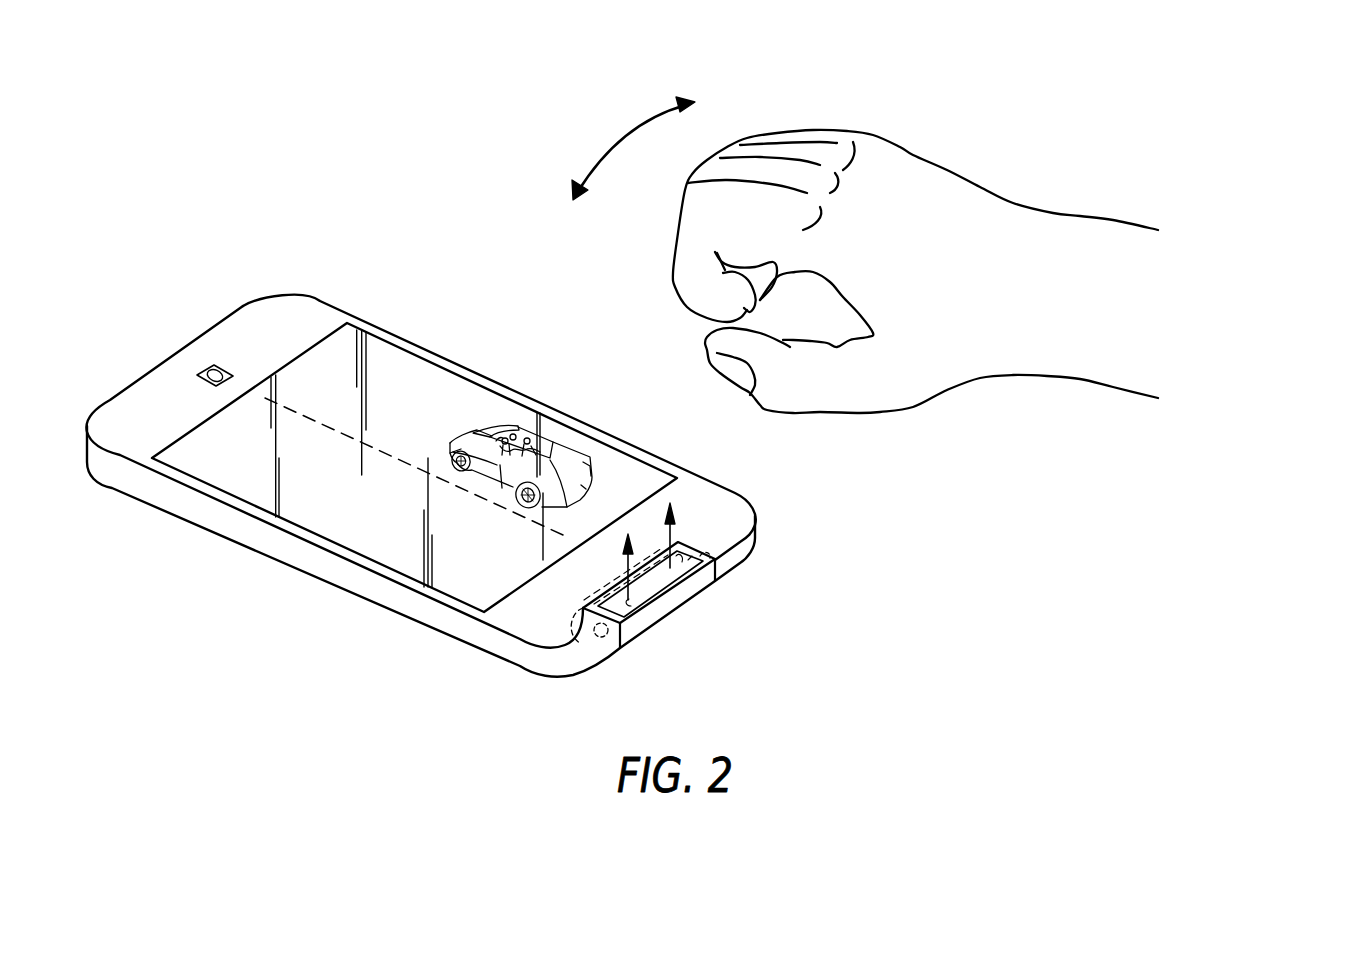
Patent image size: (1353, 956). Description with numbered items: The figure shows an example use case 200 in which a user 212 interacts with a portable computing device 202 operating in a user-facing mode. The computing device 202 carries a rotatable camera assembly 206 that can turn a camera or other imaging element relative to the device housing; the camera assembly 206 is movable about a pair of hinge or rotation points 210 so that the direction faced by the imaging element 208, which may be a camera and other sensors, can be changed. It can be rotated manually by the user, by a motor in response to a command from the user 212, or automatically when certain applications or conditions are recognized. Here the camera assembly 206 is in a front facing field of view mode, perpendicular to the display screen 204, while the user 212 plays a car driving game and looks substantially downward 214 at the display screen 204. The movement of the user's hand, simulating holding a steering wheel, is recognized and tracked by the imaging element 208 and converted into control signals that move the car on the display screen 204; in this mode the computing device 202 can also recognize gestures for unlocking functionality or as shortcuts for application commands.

The example use case 200 is at (1240, 183).
The portable computing device 202 is at (307, 553).
The display screen 204 is at (390, 373).
The rotatable camera assembly 206 is at (663, 637).
The imaging element 208 is at (673, 585).
The hinge or rotation points 210 is at (708, 570).
The user 212 is at (943, 193).
The looking substantially downward 214 is at (372, 262).